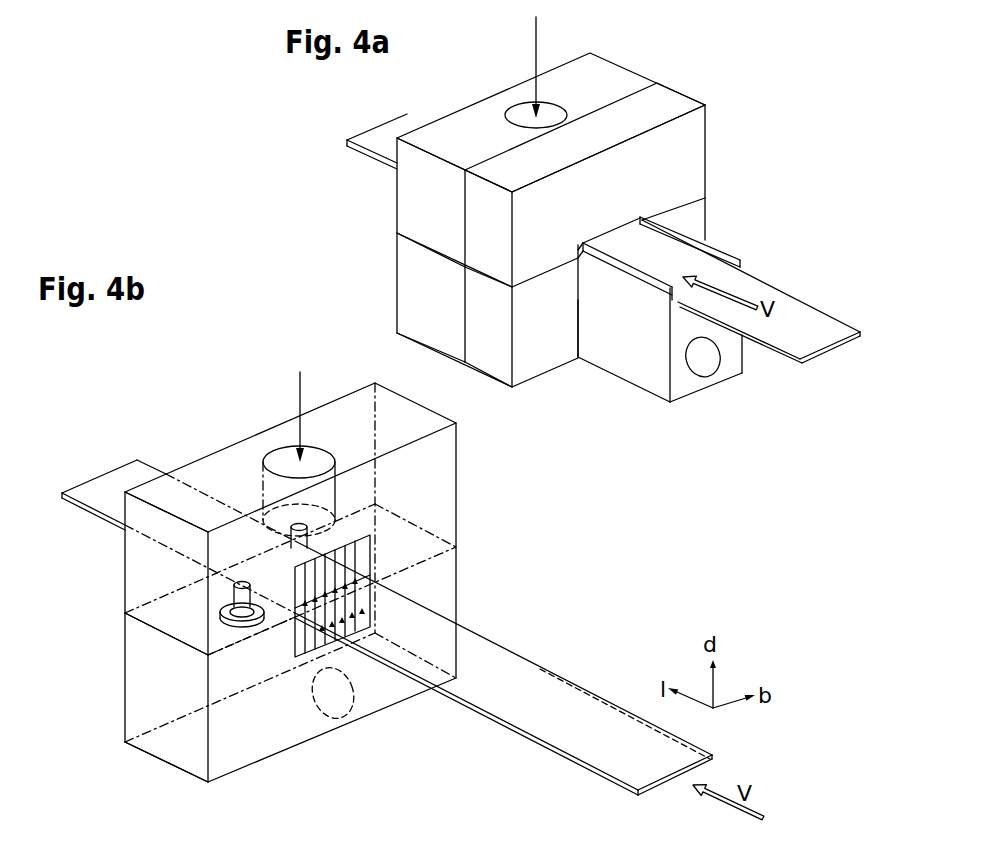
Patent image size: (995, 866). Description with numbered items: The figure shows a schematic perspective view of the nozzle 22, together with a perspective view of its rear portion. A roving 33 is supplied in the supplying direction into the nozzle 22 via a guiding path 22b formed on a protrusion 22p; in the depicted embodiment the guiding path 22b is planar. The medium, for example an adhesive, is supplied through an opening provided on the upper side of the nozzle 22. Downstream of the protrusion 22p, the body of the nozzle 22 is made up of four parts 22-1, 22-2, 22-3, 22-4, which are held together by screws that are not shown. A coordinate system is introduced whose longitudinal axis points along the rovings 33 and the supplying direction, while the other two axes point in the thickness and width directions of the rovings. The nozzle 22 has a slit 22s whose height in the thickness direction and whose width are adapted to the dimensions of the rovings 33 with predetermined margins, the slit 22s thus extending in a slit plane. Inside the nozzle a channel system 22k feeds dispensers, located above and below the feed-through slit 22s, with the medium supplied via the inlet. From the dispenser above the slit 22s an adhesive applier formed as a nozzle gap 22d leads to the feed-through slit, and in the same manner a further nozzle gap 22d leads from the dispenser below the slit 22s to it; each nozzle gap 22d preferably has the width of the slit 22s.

In FIG. 4a, the nozzle 22 is at (330, 226).
In FIG. 4b, the nozzle 22 is at (228, 376).
In FIG. 4a, the first part of the nozzle body 22-1 is at (457, 213).
In FIG. 4b, the first part of the nozzle body 22-1 is at (155, 580).
In FIG. 4b, the second part of the nozzle body 22-2 is at (155, 690).
In FIG. 4a, the third part of the nozzle body 22-3 is at (579, 233).
In FIG. 4a, the fourth part of the nozzle body 22-4 is at (569, 337).
In FIG. 4a, the guiding path 22b is at (683, 307).
In FIG. 4a, the protrusion 22p is at (620, 357).
In FIG. 4b, the nozzle gap 22d is at (383, 570).
In FIG. 4b, the slit 22s is at (375, 585).
In FIG. 4b, the channel system 22k is at (232, 634).
In FIG. 4a, the roving 33 is at (772, 345).
In FIG. 4b, the roving 33 is at (607, 698).